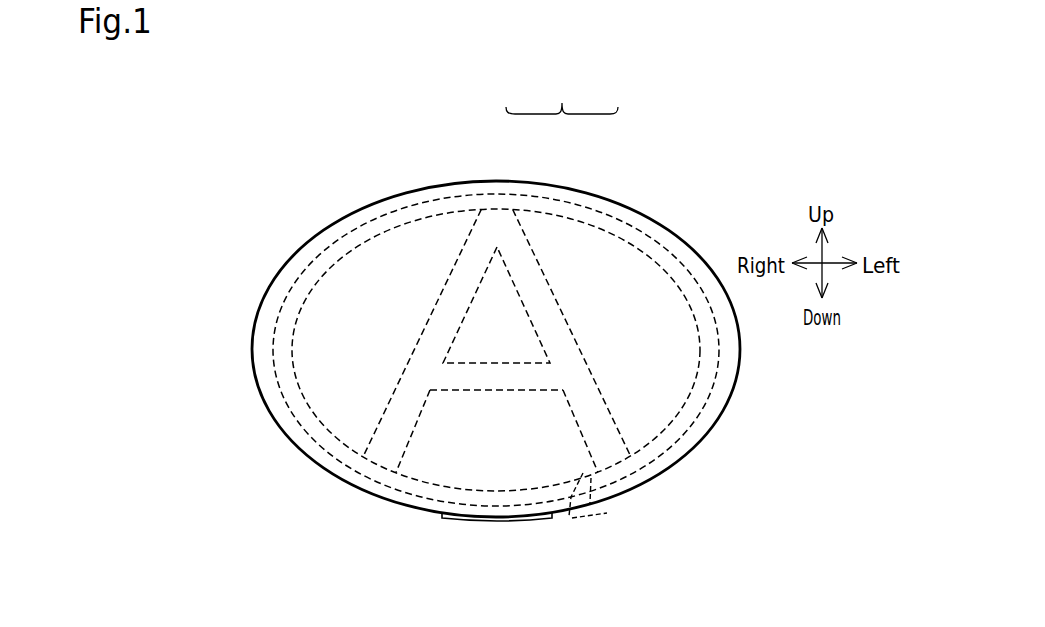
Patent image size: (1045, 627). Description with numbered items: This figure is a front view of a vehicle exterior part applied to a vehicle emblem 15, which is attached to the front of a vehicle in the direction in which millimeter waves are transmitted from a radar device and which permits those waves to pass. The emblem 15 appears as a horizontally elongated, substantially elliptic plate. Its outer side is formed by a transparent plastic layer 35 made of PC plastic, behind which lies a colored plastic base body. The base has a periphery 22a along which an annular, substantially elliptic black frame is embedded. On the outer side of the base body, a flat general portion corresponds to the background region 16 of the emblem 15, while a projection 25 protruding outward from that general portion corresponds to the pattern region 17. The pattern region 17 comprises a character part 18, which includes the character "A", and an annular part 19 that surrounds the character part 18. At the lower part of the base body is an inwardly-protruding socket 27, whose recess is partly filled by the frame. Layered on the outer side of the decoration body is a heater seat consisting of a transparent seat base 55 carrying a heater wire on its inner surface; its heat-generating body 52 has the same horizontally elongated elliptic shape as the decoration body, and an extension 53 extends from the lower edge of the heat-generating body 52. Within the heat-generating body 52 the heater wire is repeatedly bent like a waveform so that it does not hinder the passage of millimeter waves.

The emblem 15 is at (262, 228).
The background region 16 is at (656, 414).
The pattern region 17 is at (562, 90).
The character part 18 is at (528, 240).
The annular part 19 is at (578, 204).
The periphery 22a is at (683, 205).
The projection 25 is at (607, 518).
The socket 27 is at (462, 519).
The transparent plastic layer 35 is at (662, 459).
The heat-generating body 52 is at (421, 458).
The extension 53 is at (508, 518).
The seat base 55 is at (338, 462).